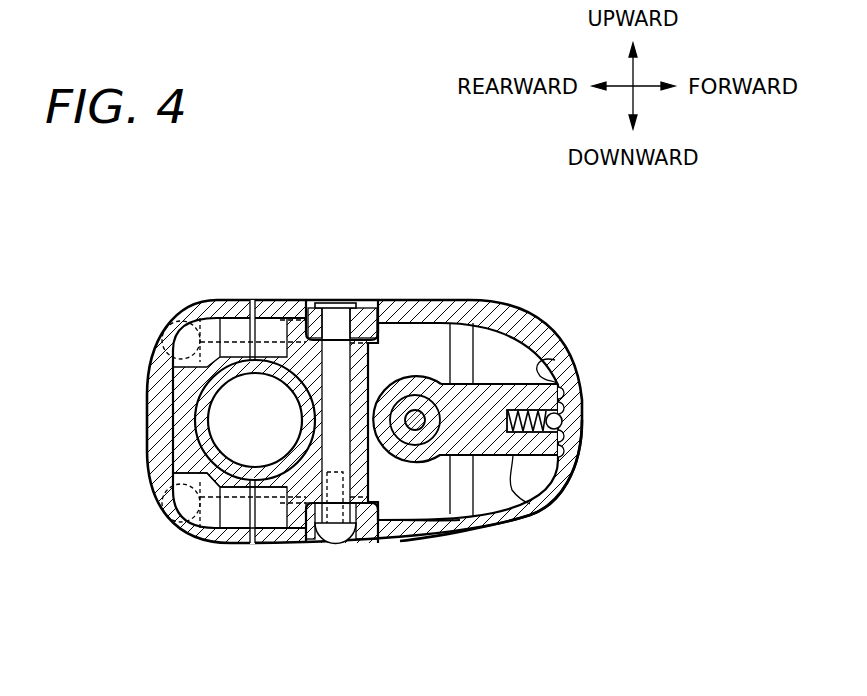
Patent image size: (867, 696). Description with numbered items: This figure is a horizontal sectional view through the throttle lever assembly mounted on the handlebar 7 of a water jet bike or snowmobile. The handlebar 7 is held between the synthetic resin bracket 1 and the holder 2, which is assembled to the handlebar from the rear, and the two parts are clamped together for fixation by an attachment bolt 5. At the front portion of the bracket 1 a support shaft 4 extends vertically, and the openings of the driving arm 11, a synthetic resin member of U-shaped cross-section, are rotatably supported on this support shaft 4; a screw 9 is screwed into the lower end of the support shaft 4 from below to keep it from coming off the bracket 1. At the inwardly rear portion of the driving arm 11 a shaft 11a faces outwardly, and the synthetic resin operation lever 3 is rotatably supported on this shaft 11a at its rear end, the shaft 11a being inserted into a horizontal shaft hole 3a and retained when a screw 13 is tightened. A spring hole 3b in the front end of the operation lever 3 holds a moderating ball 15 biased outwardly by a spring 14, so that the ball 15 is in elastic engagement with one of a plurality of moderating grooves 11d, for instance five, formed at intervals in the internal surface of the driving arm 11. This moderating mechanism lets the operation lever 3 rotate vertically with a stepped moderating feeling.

The bracket 1 is at (283, 309).
The holder 2 is at (228, 531).
The operation lever 3 is at (478, 384).
The shaft hole 3a is at (398, 378).
The spring hole 3b is at (513, 384).
The support shaft 4 is at (334, 304).
The attachment bolt 5 is at (165, 322).
The handlebar 7 is at (225, 307).
The screw 9 is at (337, 528).
The driving arm 11 is at (383, 306).
The shaft 11a is at (446, 438).
The moderating grooves 11d is at (550, 359).
The screw 13 is at (488, 533).
The spring 14 is at (558, 516).
The moderating ball 15 is at (565, 425).